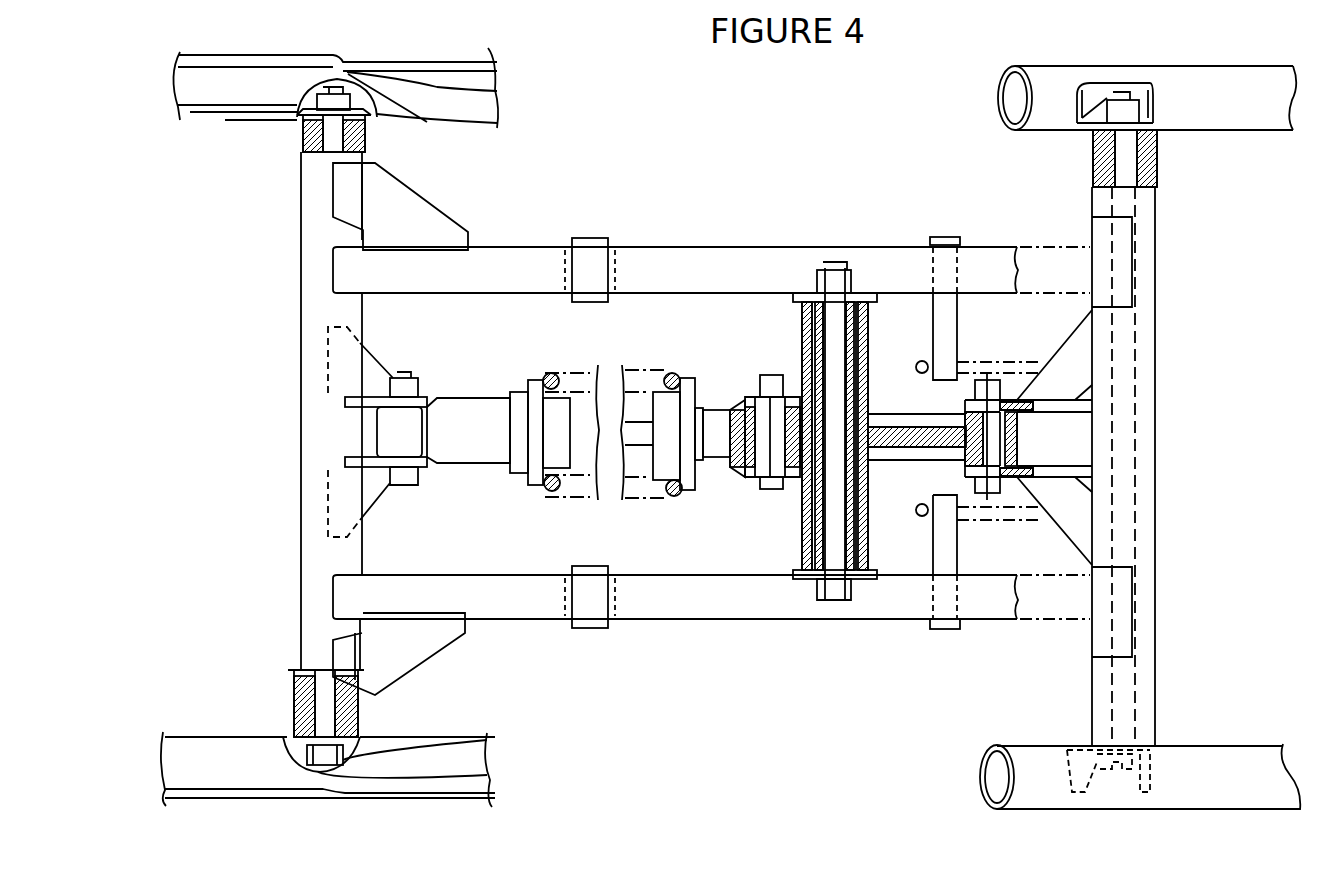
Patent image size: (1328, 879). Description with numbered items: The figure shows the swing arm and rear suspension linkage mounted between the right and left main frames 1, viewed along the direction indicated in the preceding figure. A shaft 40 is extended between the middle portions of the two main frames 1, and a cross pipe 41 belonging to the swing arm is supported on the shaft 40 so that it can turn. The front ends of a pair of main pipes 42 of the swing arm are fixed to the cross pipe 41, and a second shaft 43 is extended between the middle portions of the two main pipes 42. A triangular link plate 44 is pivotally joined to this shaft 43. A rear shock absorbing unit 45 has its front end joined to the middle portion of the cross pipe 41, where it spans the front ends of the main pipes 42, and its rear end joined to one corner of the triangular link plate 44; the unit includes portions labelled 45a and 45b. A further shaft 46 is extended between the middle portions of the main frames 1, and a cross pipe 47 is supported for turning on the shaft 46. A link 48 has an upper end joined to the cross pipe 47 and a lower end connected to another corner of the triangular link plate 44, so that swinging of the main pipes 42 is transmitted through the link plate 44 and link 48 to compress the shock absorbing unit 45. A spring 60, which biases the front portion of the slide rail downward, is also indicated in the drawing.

The main frame 1 is at (475, 73).
The shaft 40 is at (311, 137).
The cross pipe 41 is at (303, 322).
The main pipes 42 is at (712, 262).
The shaft 43 is at (832, 308).
The triangular link plate 44 is at (905, 458).
The rear shock absorbing unit 45 is at (529, 436).
The shaft portion 45a is at (482, 460).
The bearing portion 45b is at (650, 492).
The shaft 46 is at (1130, 172).
The cross pipe 47 is at (1155, 402).
The link 48 is at (1073, 473).
The spring 60 is at (998, 512).